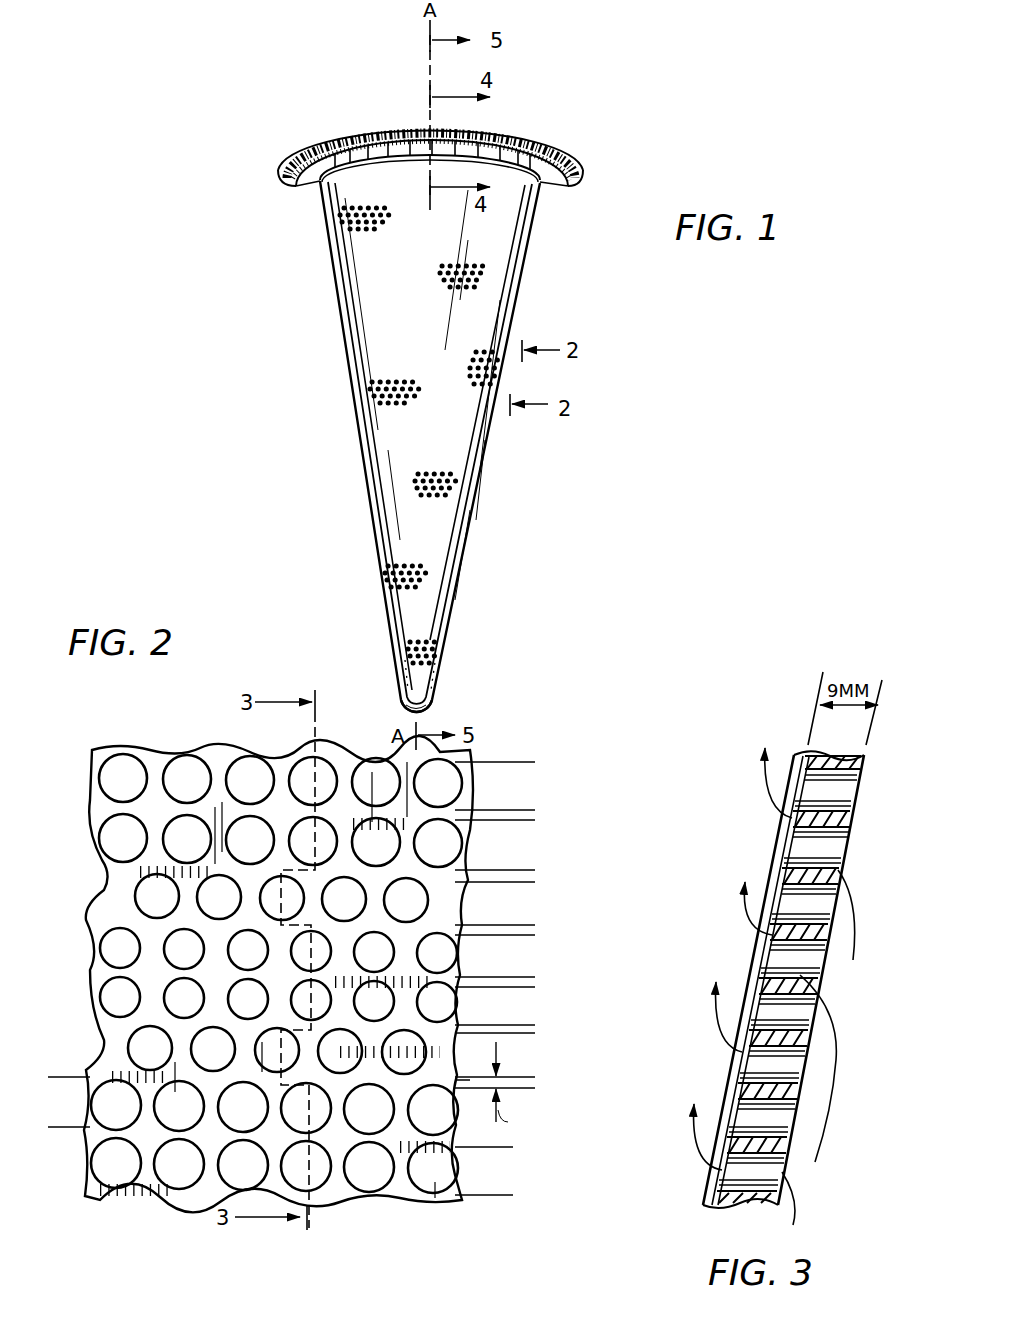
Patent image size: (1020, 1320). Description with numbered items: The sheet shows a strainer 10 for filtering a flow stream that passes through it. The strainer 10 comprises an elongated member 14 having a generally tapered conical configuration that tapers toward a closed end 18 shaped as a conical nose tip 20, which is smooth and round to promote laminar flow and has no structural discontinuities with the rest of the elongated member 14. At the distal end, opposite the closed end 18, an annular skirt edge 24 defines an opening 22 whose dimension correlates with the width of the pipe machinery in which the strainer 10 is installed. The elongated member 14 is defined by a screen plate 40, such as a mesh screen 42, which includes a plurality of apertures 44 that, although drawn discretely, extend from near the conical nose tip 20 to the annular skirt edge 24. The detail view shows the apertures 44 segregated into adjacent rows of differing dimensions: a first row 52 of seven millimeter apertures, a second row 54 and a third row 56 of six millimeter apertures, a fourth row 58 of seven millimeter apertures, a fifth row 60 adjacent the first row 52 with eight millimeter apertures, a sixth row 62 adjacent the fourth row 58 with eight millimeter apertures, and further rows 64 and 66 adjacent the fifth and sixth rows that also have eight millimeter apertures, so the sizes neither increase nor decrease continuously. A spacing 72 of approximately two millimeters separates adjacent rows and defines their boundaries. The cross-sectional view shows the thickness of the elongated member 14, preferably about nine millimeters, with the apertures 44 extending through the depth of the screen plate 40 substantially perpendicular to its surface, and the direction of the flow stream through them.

In FIG. 1, the strainer 10 is at (275, 272).
In FIG. 1, the elongated member 14 is at (543, 298).
In FIG. 3, the elongated member 14 is at (880, 793).
In FIG. 1, the closed end 18 is at (432, 700).
In FIG. 1, the conical nose tip 20 is at (432, 716).
In FIG. 1, the opening 22 is at (356, 128).
In FIG. 1, the annular skirt edge 24 is at (308, 188).
In FIG. 1, the screen plate 40 is at (312, 343).
In FIG. 2, the screen plate 40 is at (112, 920).
In FIG. 3, the screen plate 40 is at (813, 1043).
In FIG. 1, the mesh screen 42 is at (393, 435).
In FIG. 2, the mesh screen 42 is at (136, 722).
In FIG. 1, the apertures 44 is at (482, 368).
In FIG. 2, the apertures 44 is at (122, 778).
In FIG. 3, the apertures 44 is at (807, 788).
In FIG. 2, the first row 52 is at (549, 903).
In FIG. 2, the second row 54 is at (547, 960).
In FIG. 2, the third row 56 is at (535, 1012).
In FIG. 2, the fourth row 58 is at (512, 1062).
In FIG. 2, the fifth row 60 is at (564, 858).
In FIG. 2, the sixth row 62 is at (560, 1124).
In FIG. 2, the row 64 is at (500, 752).
In FIG. 2, the row 66 is at (539, 1168).
In FIG. 2, the spacing 72 is at (522, 1080).